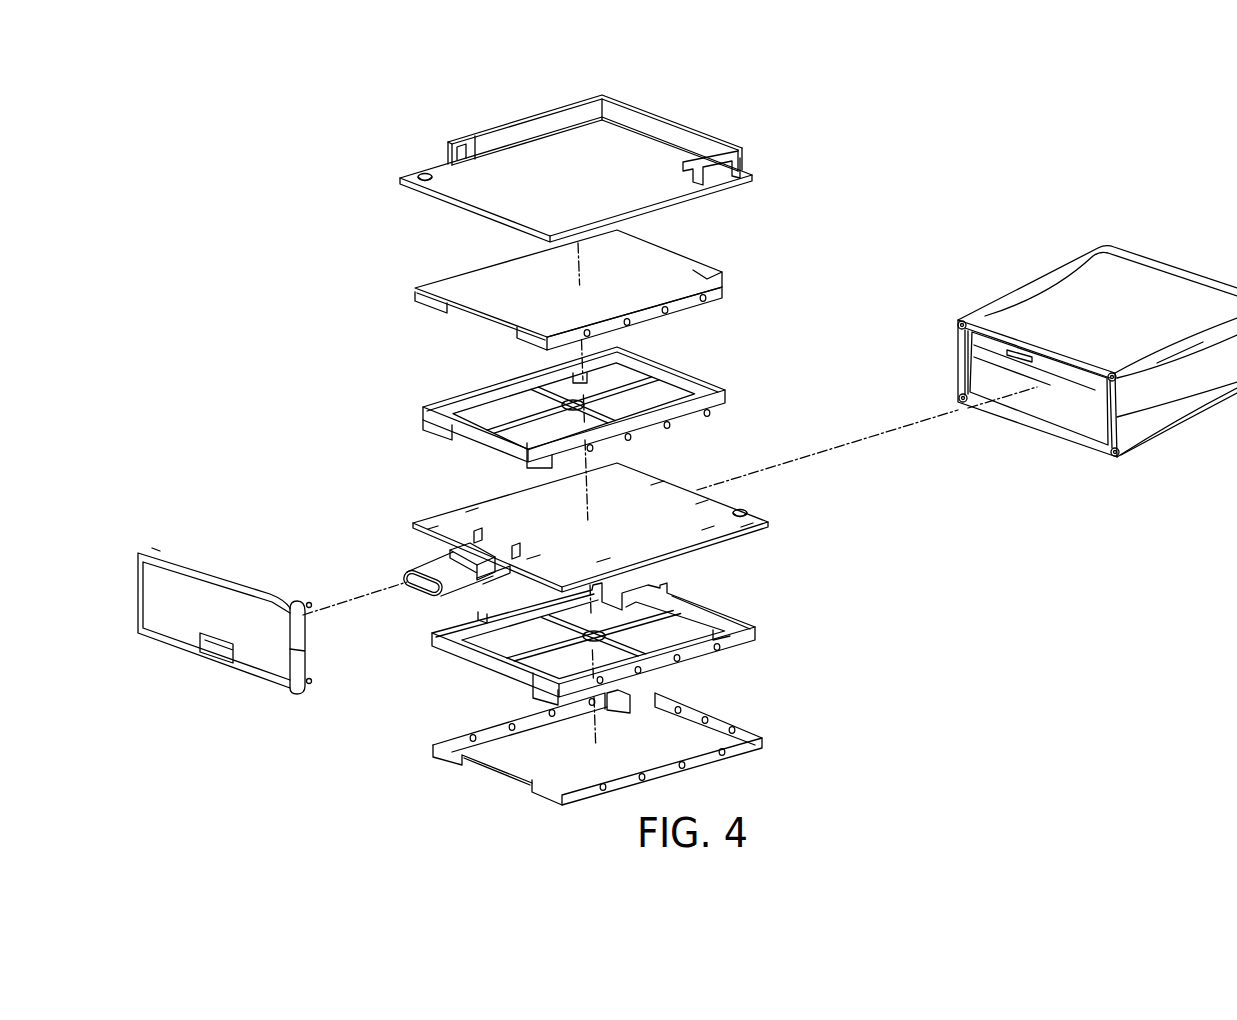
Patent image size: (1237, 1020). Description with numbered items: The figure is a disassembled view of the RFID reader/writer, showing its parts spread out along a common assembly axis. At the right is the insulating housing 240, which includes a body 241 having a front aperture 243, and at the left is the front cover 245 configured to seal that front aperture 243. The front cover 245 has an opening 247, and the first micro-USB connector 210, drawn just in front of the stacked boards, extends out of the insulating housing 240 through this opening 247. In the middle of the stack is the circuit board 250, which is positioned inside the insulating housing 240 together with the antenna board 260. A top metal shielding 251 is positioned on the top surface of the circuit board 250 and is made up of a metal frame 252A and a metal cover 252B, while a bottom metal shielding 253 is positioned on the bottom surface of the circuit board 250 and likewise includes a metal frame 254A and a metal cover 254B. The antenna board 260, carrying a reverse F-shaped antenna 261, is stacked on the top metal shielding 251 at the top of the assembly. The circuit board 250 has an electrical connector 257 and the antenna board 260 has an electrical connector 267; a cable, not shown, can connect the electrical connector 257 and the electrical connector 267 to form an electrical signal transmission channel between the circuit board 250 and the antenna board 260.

The first micro-USB connector 210 is at (423, 563).
The insulating housing 240 is at (1097, 311).
The body 241 is at (1169, 405).
The front aperture 243 is at (1047, 413).
The front cover 245 is at (225, 639).
The opening 247 is at (213, 652).
The circuit board 250 is at (597, 527).
The top metal shielding 251 is at (642, 349).
The metal frame 252A is at (615, 407).
The metal cover 252B is at (697, 282).
The bottom metal shielding 253 is at (676, 694).
The metal frame 254A is at (745, 638).
The metal cover 254B is at (646, 747).
The electrical connector 257 is at (745, 512).
The antenna board 260 is at (552, 168).
The reverse F-shaped antenna 261 is at (477, 130).
The electrical connector 267 is at (420, 172).